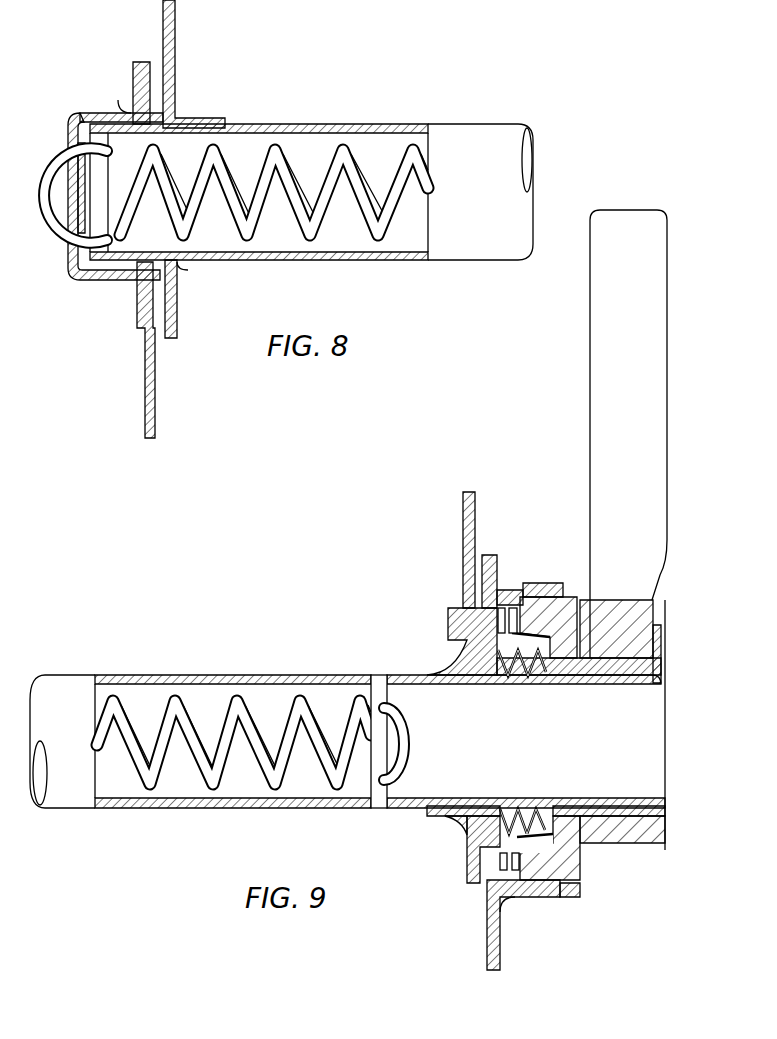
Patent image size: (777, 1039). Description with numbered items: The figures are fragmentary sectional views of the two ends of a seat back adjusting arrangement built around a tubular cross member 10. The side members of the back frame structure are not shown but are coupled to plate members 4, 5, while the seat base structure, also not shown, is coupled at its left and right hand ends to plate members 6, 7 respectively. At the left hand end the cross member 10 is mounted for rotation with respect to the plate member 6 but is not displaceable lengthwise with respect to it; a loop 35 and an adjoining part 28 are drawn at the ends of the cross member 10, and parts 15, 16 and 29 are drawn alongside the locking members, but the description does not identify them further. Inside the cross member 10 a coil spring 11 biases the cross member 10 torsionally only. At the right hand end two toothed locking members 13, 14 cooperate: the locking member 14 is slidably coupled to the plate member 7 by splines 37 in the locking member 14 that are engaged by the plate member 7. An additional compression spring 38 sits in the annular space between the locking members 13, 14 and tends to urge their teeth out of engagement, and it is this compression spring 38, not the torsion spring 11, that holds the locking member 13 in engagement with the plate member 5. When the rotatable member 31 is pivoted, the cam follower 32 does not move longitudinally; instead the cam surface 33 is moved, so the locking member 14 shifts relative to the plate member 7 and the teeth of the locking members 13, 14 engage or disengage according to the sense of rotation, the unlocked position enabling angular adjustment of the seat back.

In FIG. 8, the plate member 4 is at (176, 27).
In FIG. 9, the plate member 5 is at (463, 510).
In FIG. 8, the plate member 6 is at (122, 113).
In FIG. 9, the plate member 7 is at (492, 922).
In FIG. 8, the cross member 10 is at (358, 118).
In FIG. 9, the cross member 10 is at (250, 812).
In FIG. 8, the coil spring 11 is at (312, 240).
In FIG. 9, the coil spring 11 is at (160, 760).
In FIG. 9, the locking member 13 is at (448, 625).
In FIG. 9, the locking member 14 is at (548, 600).
In FIG. 9, the plate 15 is at (492, 582).
In FIG. 9, the bracket 16 is at (512, 592).
In FIG. 9, the tube end 28 is at (118, 808).
In FIG. 9, the block 29 is at (470, 806).
In FIG. 9, the rotatable member 31 is at (590, 412).
In FIG. 9, the cam follower 32 is at (664, 614).
In FIG. 9, the cam surface 33 is at (565, 808).
In FIG. 8, the loop 35 is at (72, 135).
In FIG. 9, the splines 37 is at (553, 890).
In FIG. 9, the compression spring 38 is at (522, 677).